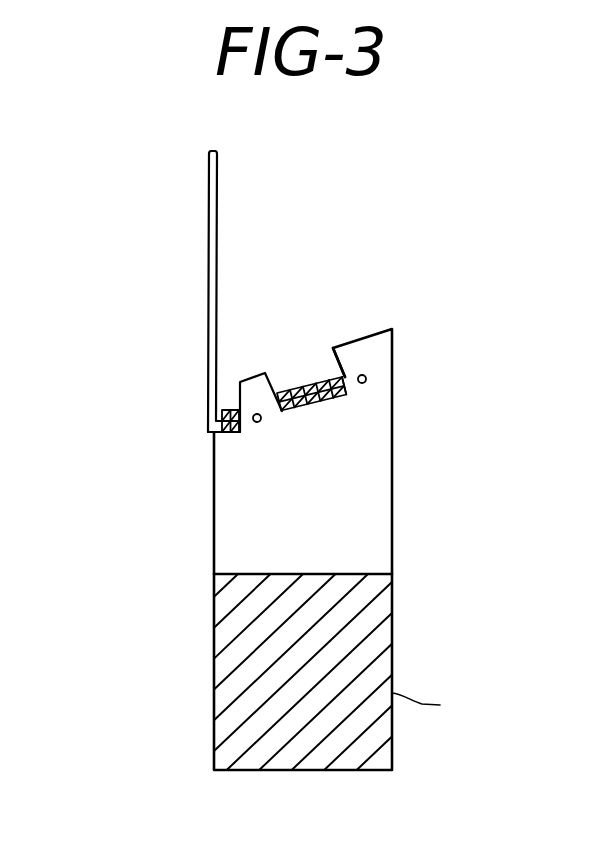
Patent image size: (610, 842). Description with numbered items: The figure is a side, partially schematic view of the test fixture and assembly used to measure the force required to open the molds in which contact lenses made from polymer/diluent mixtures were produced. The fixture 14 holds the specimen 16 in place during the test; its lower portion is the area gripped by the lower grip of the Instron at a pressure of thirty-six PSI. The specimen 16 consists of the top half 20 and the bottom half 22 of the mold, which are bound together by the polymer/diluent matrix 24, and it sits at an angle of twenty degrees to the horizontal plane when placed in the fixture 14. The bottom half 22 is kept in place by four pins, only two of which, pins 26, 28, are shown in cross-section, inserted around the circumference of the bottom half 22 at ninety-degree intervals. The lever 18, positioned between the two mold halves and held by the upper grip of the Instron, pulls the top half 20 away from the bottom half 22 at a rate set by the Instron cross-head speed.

The fixture 14 is at (205, 560).
The specimen 16 is at (308, 366).
The lever 18 is at (209, 245).
The top half 20 is at (346, 376).
The bottom half 22 is at (313, 403).
The polymer/diluent matrix 24 is at (347, 395).
The pin 26 is at (366, 379).
The pin 28 is at (254, 422).